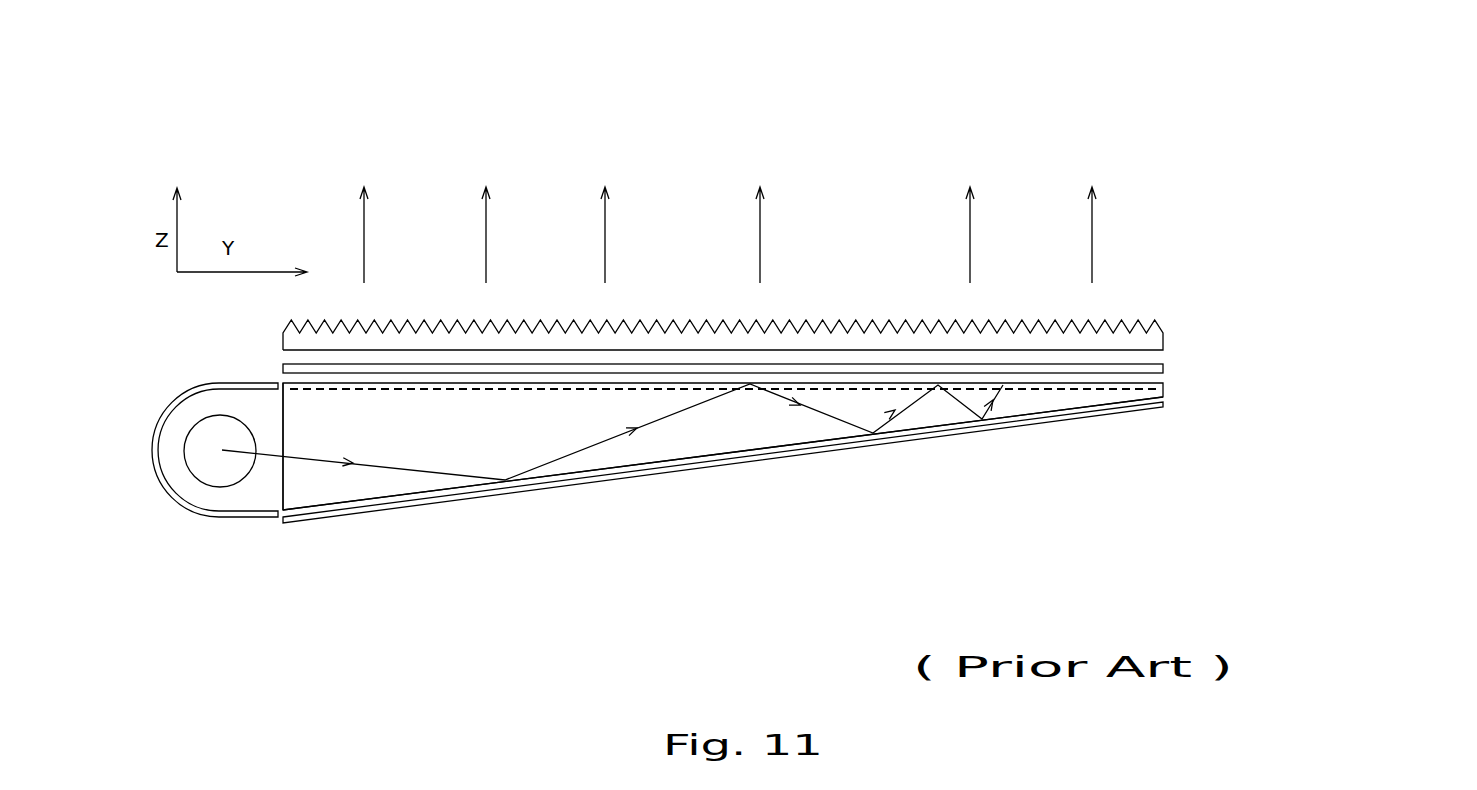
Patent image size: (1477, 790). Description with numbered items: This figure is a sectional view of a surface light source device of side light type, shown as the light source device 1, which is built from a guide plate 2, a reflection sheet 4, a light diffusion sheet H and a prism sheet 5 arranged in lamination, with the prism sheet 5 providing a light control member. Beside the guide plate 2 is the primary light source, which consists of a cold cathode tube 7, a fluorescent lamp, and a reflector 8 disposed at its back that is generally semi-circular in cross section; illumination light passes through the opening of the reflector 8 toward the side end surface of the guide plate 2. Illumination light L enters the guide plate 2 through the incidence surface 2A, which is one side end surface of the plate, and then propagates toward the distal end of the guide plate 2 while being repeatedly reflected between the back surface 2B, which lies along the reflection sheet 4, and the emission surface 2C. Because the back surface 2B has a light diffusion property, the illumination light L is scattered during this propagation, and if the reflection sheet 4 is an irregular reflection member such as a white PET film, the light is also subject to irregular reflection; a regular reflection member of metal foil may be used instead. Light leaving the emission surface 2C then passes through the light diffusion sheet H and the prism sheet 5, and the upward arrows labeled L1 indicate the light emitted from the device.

The light source device 1 is at (853, 170).
The guide plate 2 is at (723, 484).
The incidence surface 2A is at (343, 446).
The back surface 2B is at (723, 491).
The emission surface 2C is at (724, 291).
The reflection sheet 4 is at (723, 493).
The prism sheet 5 is at (1163, 328).
The cold cathode tube 7 is at (220, 501).
The reflector 8 is at (189, 485).
The light diffusion sheet H is at (1163, 368).
The illumination light L is at (612, 485).
The emitted light L1 is at (1097, 250).